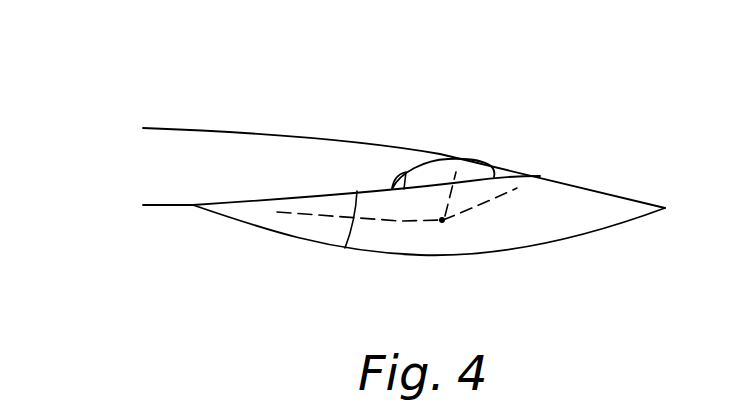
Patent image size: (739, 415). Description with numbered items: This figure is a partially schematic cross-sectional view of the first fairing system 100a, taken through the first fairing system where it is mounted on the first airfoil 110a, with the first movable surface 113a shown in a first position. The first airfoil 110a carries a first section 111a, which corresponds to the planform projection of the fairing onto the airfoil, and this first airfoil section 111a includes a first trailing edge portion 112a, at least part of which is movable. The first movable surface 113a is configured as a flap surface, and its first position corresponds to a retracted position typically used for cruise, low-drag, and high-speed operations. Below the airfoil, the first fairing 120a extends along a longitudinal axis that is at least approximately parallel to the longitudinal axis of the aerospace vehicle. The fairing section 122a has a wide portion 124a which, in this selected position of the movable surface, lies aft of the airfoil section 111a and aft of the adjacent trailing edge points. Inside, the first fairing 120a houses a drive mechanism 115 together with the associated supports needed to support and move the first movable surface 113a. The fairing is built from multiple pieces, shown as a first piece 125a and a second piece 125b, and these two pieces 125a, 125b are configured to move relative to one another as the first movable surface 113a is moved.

The first fairing system 100a is at (160, 76).
The first airfoil 110a is at (176, 177).
The first section of the first airfoil 111a is at (337, 138).
The first trailing edge portion 112a is at (538, 172).
The first movable surface 113a is at (522, 156).
The drive mechanism 115 is at (412, 222).
The first fairing 120a is at (319, 285).
The fairing section 122a is at (361, 260).
The wide portion 124a is at (600, 215).
The first piece 125a is at (300, 240).
The second piece 125b is at (432, 255).